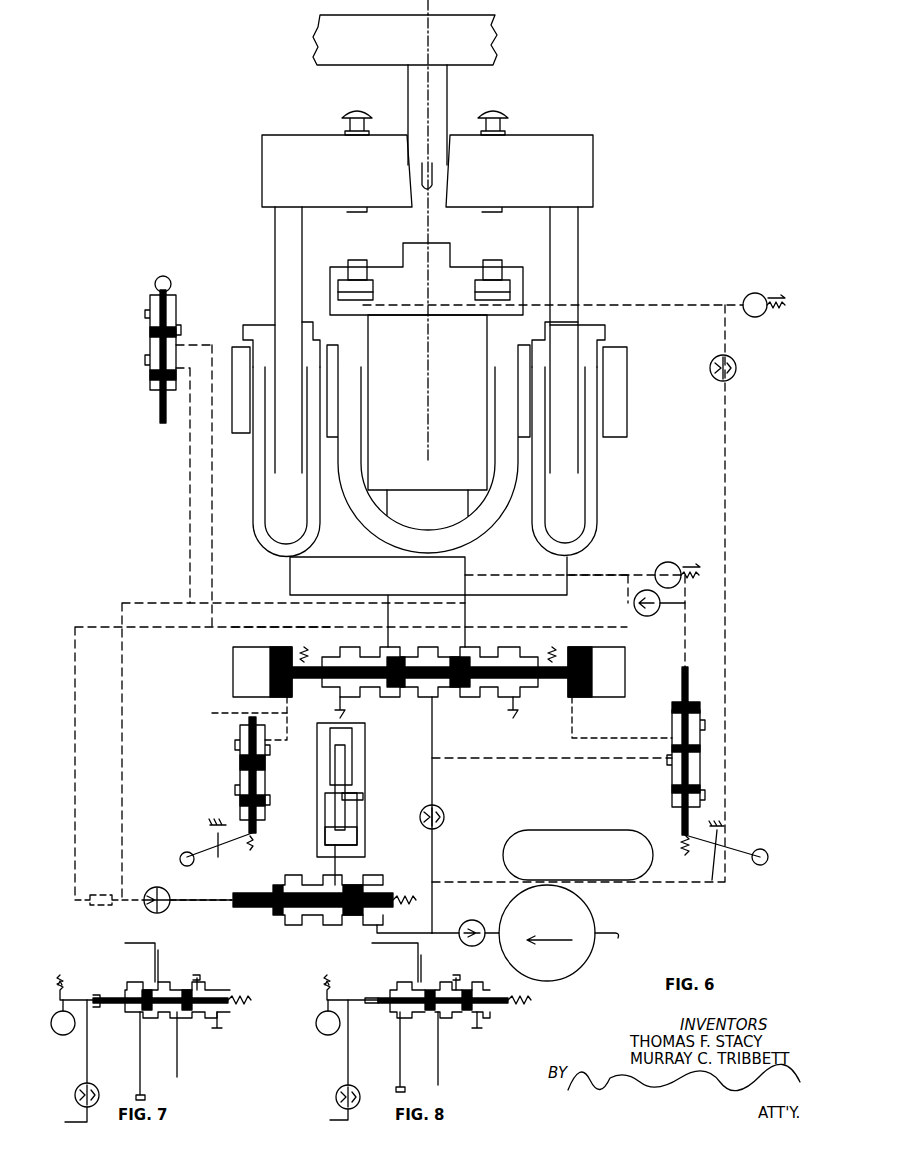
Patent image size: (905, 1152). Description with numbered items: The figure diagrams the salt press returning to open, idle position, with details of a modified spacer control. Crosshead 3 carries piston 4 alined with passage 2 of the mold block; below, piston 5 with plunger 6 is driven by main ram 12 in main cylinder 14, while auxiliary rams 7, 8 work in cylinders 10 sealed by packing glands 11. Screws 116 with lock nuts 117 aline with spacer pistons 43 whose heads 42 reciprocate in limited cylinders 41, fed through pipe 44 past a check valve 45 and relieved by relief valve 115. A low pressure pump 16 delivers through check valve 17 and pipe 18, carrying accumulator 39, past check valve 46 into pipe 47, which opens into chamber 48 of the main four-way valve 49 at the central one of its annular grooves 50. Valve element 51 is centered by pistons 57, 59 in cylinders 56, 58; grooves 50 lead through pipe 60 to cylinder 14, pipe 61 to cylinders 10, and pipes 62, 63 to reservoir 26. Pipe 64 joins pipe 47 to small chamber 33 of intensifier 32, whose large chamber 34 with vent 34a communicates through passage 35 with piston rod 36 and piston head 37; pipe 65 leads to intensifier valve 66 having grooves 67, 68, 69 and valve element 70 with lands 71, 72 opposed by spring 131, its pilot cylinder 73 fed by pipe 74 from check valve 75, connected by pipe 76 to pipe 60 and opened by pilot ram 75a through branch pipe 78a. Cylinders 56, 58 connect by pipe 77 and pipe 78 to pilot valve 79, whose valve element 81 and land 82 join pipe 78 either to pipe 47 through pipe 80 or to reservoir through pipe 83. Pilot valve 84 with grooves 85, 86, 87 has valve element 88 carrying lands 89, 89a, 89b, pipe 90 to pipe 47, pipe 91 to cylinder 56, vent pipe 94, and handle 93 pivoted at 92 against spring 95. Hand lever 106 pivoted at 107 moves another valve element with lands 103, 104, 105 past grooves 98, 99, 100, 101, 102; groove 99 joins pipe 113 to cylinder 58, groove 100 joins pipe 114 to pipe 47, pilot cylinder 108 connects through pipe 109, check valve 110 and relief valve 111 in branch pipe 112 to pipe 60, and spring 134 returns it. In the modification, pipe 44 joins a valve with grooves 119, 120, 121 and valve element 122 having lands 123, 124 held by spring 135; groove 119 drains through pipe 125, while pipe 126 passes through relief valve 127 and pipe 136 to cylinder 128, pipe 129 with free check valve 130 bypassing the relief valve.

In FIG. 6, the passage 2 is at (432, 170).
In FIG. 6, the crosshead 3 is at (497, 45).
In FIG. 6, the piston 4 is at (440, 100).
In FIG. 6, the piston 5 is at (430, 302).
In FIG. 6, the plunger 6 is at (436, 250).
In FIG. 6, the auxiliary ram 7 is at (290, 282).
In FIG. 6, the auxiliary ram 8 is at (570, 294).
In FIG. 6, the cylinder 10 is at (592, 486).
In FIG. 6, the packing gland 11 is at (588, 328).
In FIG. 6, the main ram 12 is at (388, 417).
In FIG. 6, the main cylinder 14 is at (358, 512).
In FIG. 6, the low pressure pump 16 is at (590, 918).
In FIG. 6, the check valve 17 is at (472, 920).
In FIG. 6, the pipe 18 is at (445, 932).
In FIG. 6, the reservoir 26 is at (777, 315).
In FIG. 7, the reservoir 26 is at (150, 1100).
In FIG. 8, the reservoir 26 is at (410, 1085).
In FIG. 6, the intensifier 32 is at (358, 775).
In FIG. 6, the small pressure chamber 33 is at (350, 745).
In FIG. 6, the large chamber 34 is at (358, 818).
In FIG. 6, the vent 34a is at (365, 785).
In FIG. 6, the passage 35 is at (365, 800).
In FIG. 6, the piston rod 36 is at (340, 822).
In FIG. 6, the piston head 37 is at (335, 832).
In FIG. 6, the accumulator 39 is at (565, 828).
In FIG. 6, the limited cylinders 41 is at (508, 297).
In FIG. 6, the piston heads 42 is at (500, 283).
In FIG. 6, the pistons 43 is at (494, 262).
In FIG. 6, the pipe 44 is at (593, 900).
In FIG. 7, the pipe 44 is at (177, 1076).
In FIG. 8, the pipe 44 is at (438, 1075).
In FIG. 6, the check valve 45 is at (710, 368).
In FIG. 6, the check valve 46 is at (445, 812).
In FIG. 6, the pipe 47 is at (435, 782).
In FIG. 6, the chamber 48 is at (435, 700).
In FIG. 6, the main four-way valve 49 is at (493, 645).
In FIG. 6, the annular grooves 50 is at (462, 647).
In FIG. 6, the valve element 51 is at (512, 660).
In FIG. 6, the cylinder 56 is at (243, 650).
In FIG. 6, the piston 57 is at (270, 676).
In FIG. 6, the cylinder 58 is at (602, 697).
In FIG. 6, the piston 59 is at (592, 680).
In FIG. 6, the pipe 60 is at (468, 578).
In FIG. 6, the pipe 61 is at (390, 590).
In FIG. 6, the pipe 62 is at (345, 712).
In FIG. 6, the pipe 63 is at (517, 710).
In FIG. 6, the pipe 64 is at (372, 735).
In FIG. 6, the pipe 65 is at (330, 872).
In FIG. 6, the intensifier valve 66 is at (317, 926).
In FIG. 6, the annular groove 67 is at (290, 875).
In FIG. 6, the annular groove 68 is at (340, 885).
In FIG. 6, the annular groove 69 is at (368, 878).
In FIG. 6, the valve element 70 is at (252, 917).
In FIG. 7, the valve element 70 is at (161, 977).
In FIG. 8, the valve element 70 is at (436, 1000).
In FIG. 6, the land 71 is at (372, 890).
In FIG. 6, the land 72 is at (275, 877).
In FIG. 6, the pilot cylinder 73 is at (232, 912).
In FIG. 6, the pipe 74 is at (182, 900).
In FIG. 6, the check valve 75 is at (150, 912).
In FIG. 6, the pilot ram 75a is at (95, 905).
In FIG. 6, the pipe 76 is at (125, 890).
In FIG. 6, the pipe 77 is at (285, 628).
In FIG. 6, the pipe 78 is at (190, 435).
In FIG. 6, the branch pipe 78a is at (77, 825).
In FIG. 6, the pilot valve 79 is at (139, 335).
In FIG. 6, the pipe 80 is at (214, 560).
In FIG. 6, the valve element 81 is at (172, 300).
In FIG. 6, the valve land 82 is at (150, 372).
In FIG. 6, the pipe 83 is at (152, 385).
In FIG. 6, the pilot valve 84 is at (235, 765).
In FIG. 6, the annular groove 85 is at (265, 790).
In FIG. 6, the annular groove 86 is at (265, 760).
In FIG. 6, the annular groove 87 is at (268, 735).
In FIG. 6, the valve element 88 is at (256, 818).
In FIG. 6, the land 89 is at (265, 808).
In FIG. 6, the land 89a is at (240, 780).
In FIG. 6, the land 89b is at (240, 725).
In FIG. 6, the pipe 90 is at (275, 768).
In FIG. 6, the pipe 91 is at (288, 712).
In FIG. 6, the pivot 92 is at (240, 742).
In FIG. 6, the operating handle 93 is at (198, 852).
In FIG. 6, the pipe 94 is at (218, 860).
In FIG. 6, the spring 95 is at (248, 852).
In FIG. 6, the annular groove 98 is at (672, 720).
In FIG. 6, the annular groove 99 is at (672, 742).
In FIG. 6, the annular groove 100 is at (672, 765).
In FIG. 6, the annular groove 101 is at (672, 783).
In FIG. 6, the annular groove 102 is at (675, 795).
In FIG. 6, the land 103 is at (678, 700).
In FIG. 6, the land 104 is at (700, 748).
In FIG. 6, the land 105 is at (670, 795).
In FIG. 6, the hand lever 106 is at (758, 866).
In FIG. 6, the pivot 107 is at (714, 878).
In FIG. 6, the pilot cylinder 108 is at (696, 674).
In FIG. 6, the pipe 109 is at (690, 668).
In FIG. 6, the check valve 110 is at (634, 608).
In FIG. 6, the pressure relief valve 111 is at (677, 565).
In FIG. 6, the branch pipe 112 is at (656, 572).
In FIG. 6, the pipe 113 is at (622, 717).
In FIG. 6, the pipe 114 is at (525, 758).
In FIG. 6, the pressure relief valve 115 is at (750, 293).
In FIG. 6, the screws 116 is at (490, 116).
In FIG. 6, the lock nut 117 is at (512, 135).
In FIG. 7, the annular groove 119 is at (138, 982).
In FIG. 8, the annular groove 119 is at (408, 968).
In FIG. 7, the annular groove 120 is at (157, 958).
In FIG. 8, the annular groove 120 is at (410, 961).
In FIG. 7, the annular groove 121 is at (183, 990).
In FIG. 8, the annular groove 121 is at (435, 990).
In FIG. 7, the valve element 122 is at (110, 995).
In FIG. 8, the valve element 122 is at (378, 995).
In FIG. 7, the land 123 is at (140, 1035).
In FIG. 8, the land 123 is at (400, 1025).
In FIG. 7, the land 124 is at (205, 992).
In FIG. 8, the land 124 is at (472, 980).
In FIG. 7, the pipe 125 is at (140, 1065).
In FIG. 8, the pipe 125 is at (400, 1060).
In FIG. 7, the pipe 126 is at (68, 1060).
In FIG. 8, the pipe 126 is at (321, 1043).
In FIG. 7, the pressure relief valve 127 is at (48, 1035).
In FIG. 8, the pressure relief valve 127 is at (307, 1025).
In FIG. 7, the cylinder 128 is at (85, 962).
In FIG. 8, the cylinder 128 is at (345, 972).
In FIG. 7, the pipe 129 is at (87, 1050).
In FIG. 8, the pipe 129 is at (348, 1050).
In FIG. 7, the free check valve 130 is at (99, 1098).
In FIG. 8, the free check valve 130 is at (336, 1098).
In FIG. 6, the spring 131 is at (404, 923).
In FIG. 6, the spring 134 is at (685, 850).
In FIG. 7, the spring 135 is at (228, 1020).
In FIG. 8, the spring 135 is at (525, 998).
In FIG. 7, the pipe 136 is at (87, 1025).
In FIG. 8, the pipe 136 is at (348, 1025).